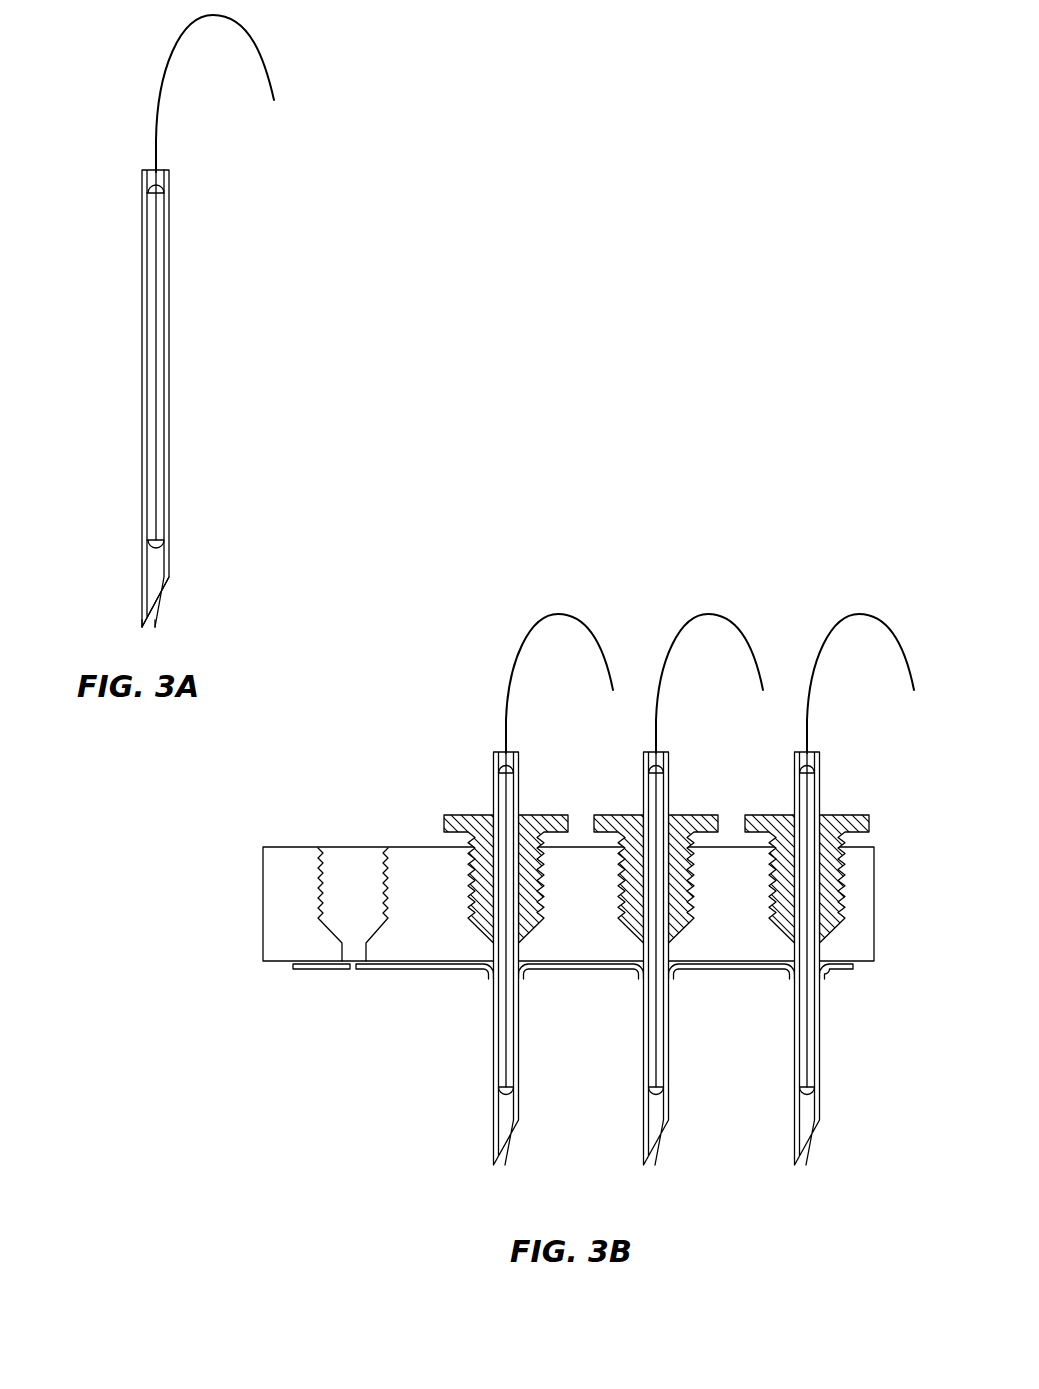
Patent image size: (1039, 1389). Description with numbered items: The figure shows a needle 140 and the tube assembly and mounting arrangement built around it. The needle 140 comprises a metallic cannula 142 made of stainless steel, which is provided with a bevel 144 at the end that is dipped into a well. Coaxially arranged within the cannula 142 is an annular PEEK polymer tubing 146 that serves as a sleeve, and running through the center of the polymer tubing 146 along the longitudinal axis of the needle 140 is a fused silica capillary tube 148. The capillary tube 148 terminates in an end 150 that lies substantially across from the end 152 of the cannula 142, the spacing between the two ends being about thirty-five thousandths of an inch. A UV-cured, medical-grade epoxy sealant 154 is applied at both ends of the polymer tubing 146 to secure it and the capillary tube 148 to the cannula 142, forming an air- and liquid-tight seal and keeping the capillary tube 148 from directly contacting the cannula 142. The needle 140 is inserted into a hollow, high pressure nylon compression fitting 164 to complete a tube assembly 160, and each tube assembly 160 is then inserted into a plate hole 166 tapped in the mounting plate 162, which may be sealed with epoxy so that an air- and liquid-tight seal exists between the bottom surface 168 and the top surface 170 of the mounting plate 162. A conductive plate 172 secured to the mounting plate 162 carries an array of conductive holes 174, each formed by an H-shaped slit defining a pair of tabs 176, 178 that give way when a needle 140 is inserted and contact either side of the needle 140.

In FIG. 3A, the needle 140 is at (70, 293).
In FIG. 3A, the cannula 142 is at (170, 395).
In FIG. 3A, the bevel 144 is at (164, 590).
In FIG. 3A, the polymer tubing 146 is at (160, 255).
In FIG. 3A, the capillary tube 148 is at (265, 65).
In FIG. 3A, the end of capillary tube 150 is at (155, 627).
In FIG. 3A, the end of cannula 152 is at (142, 627).
In FIG. 3A, the epoxy sealant 154 is at (147, 193).
In FIG. 3B, the tube assembly 160 is at (823, 807).
In FIG. 3B, the mounting plate 162 is at (270, 888).
In FIG. 3B, the compression fitting 164 is at (867, 826).
In FIG. 3B, the plate hole 166 is at (343, 865).
In FIG. 3B, the bottom surface 168 is at (554, 1012).
In FIG. 3B, the top surface 170 is at (420, 847).
In FIG. 3B, the conductive plate 172 is at (467, 969).
In FIG. 3B, the conductive hole 174 is at (637, 974).
In FIG. 3B, the tab 176 is at (788, 975).
In FIG. 3B, the tab 178 is at (832, 976).